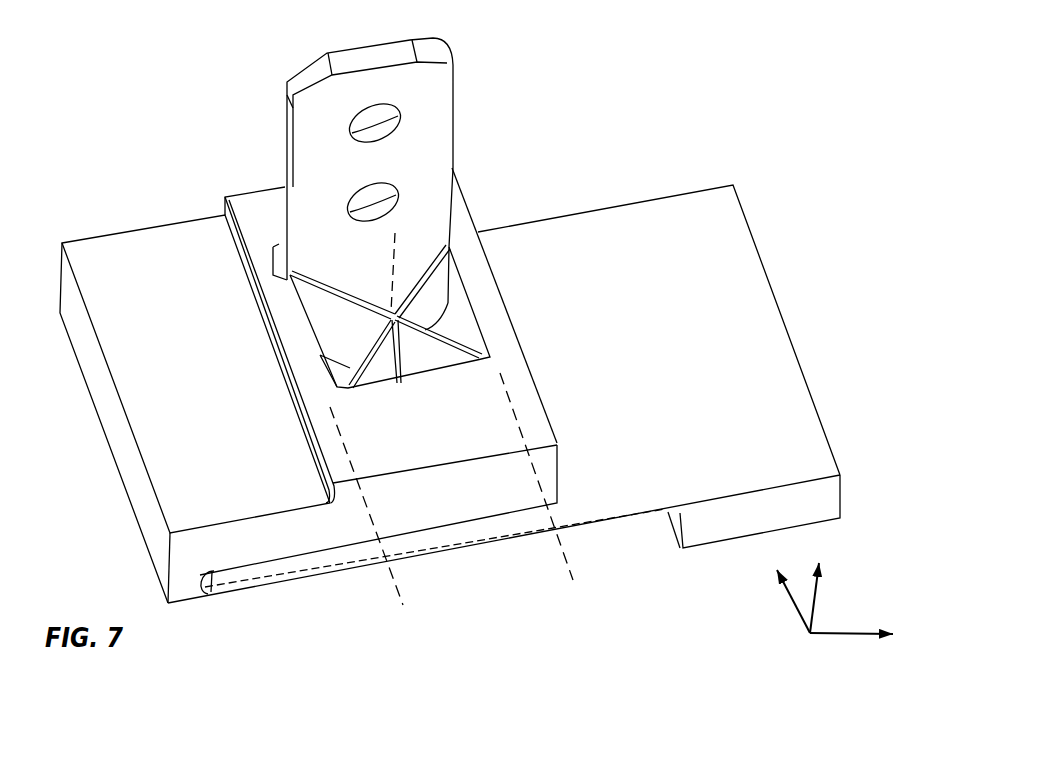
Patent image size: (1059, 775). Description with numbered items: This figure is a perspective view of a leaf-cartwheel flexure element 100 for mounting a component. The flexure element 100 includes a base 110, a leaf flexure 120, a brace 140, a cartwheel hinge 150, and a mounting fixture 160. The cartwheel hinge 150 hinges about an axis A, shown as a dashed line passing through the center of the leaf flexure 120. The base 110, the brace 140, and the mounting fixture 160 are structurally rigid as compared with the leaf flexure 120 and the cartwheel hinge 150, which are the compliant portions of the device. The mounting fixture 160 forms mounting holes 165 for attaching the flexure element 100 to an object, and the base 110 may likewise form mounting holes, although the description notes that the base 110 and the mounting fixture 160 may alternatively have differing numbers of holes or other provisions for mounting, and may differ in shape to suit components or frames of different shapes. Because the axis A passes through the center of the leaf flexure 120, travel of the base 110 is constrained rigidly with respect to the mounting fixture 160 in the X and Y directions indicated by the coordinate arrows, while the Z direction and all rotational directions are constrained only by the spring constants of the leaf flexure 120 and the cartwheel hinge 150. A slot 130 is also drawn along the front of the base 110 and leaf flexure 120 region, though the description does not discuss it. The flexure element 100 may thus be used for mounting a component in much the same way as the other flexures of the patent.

The flexure element 100 is at (163, 150).
The base 110 is at (730, 520).
The leaf flexure 120 is at (345, 572).
The slot 130 is at (222, 577).
The brace 140 is at (130, 460).
The cartwheel hinge 150 is at (573, 580).
The mounting fixture 160 is at (455, 127).
The mounting holes 165 is at (377, 203).
The axis A is at (394, 262).